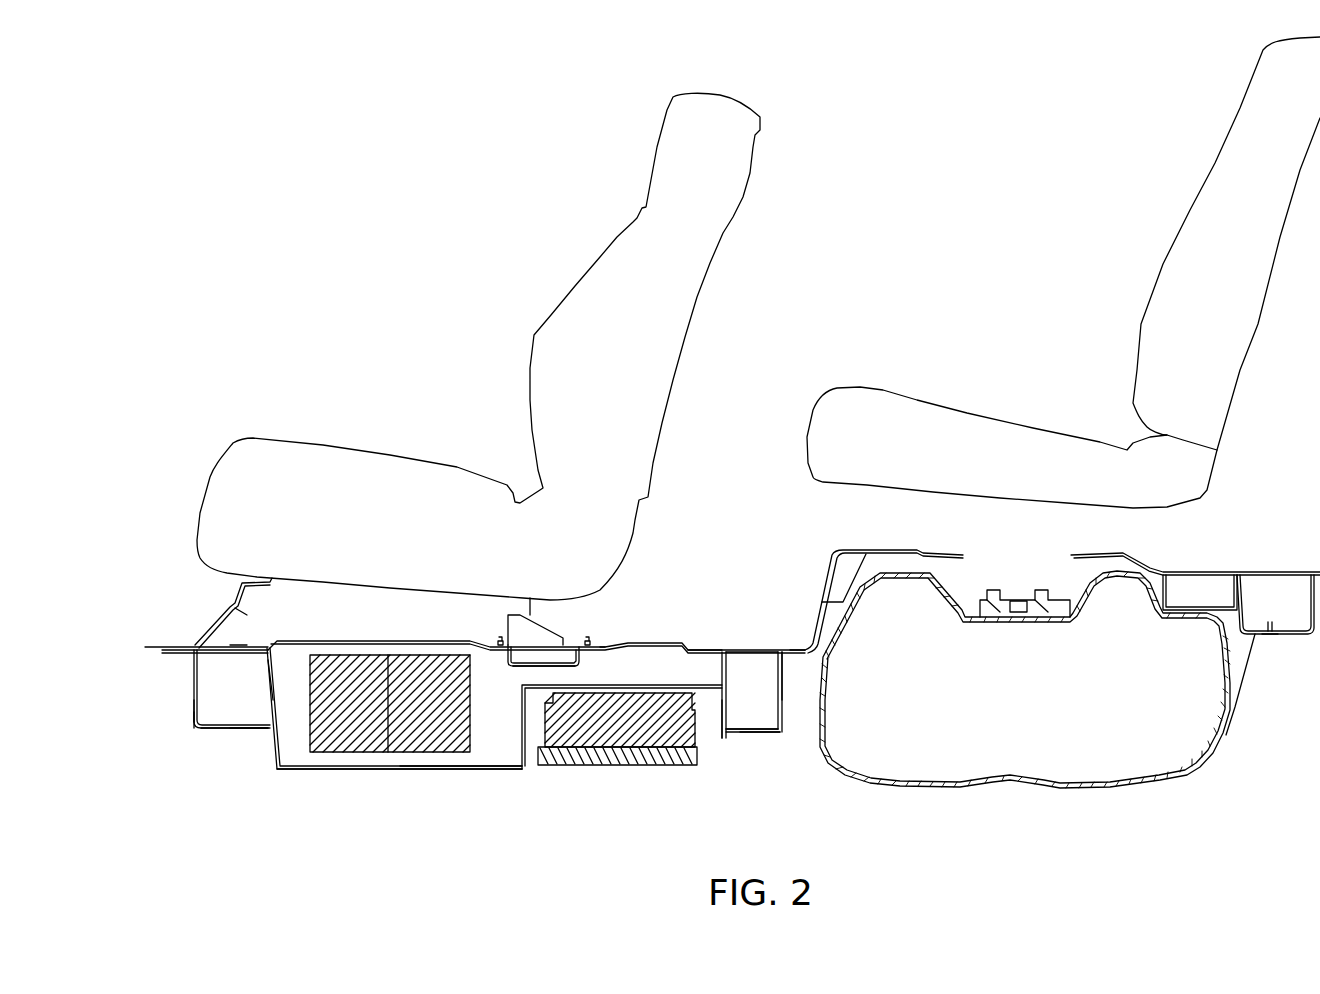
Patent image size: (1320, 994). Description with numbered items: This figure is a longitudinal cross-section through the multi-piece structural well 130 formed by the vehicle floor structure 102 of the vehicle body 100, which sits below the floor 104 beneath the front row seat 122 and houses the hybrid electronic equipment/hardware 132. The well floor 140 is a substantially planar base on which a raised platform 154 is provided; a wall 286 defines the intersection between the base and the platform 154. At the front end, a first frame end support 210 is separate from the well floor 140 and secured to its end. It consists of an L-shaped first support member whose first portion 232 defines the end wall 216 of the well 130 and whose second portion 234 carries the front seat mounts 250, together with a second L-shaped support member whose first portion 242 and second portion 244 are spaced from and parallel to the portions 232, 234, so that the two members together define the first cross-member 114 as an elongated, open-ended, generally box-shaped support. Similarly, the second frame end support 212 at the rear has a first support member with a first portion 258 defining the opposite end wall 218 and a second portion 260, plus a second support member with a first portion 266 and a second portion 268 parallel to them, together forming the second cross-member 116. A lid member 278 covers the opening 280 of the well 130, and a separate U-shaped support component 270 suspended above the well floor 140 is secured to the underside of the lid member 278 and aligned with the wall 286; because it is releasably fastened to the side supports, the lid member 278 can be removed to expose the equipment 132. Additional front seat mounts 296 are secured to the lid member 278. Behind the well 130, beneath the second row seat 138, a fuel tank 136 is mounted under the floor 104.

The vehicle body 100 is at (200, 758).
The vehicle floor structure 102 is at (725, 552).
The floor 104 is at (848, 553).
The first cross-member 114 is at (180, 726).
The second cross-member 116 is at (755, 755).
The front row seat 122 is at (400, 481).
The multi-piece well 130 is at (508, 790).
The hybrid electronic equipment/hardware 132 is at (478, 753).
The fuel tank 136 is at (1110, 788).
The second row seat 138 is at (1010, 440).
The well floor 140 is at (392, 770).
The raised platform 154 is at (655, 690).
The first frame end support 210 is at (250, 753).
The second frame end support 212 is at (790, 760).
The end wall 216 is at (275, 672).
The end wall 218 is at (736, 690).
The first portion 232 is at (280, 713).
The second portion 234 is at (232, 648).
The first portion 242 is at (193, 690).
The second portion 244 is at (240, 733).
The front seat mounts 250 is at (215, 633).
The first portion 258 is at (718, 740).
The second portion 260 is at (776, 644).
The first portion 266 is at (790, 688).
The second portion 268 is at (760, 718).
The support component 270 is at (532, 668).
The lid member 278 is at (606, 644).
The opening 280 is at (703, 652).
The wall 286 is at (522, 741).
The front seat mounts 296 is at (520, 630).